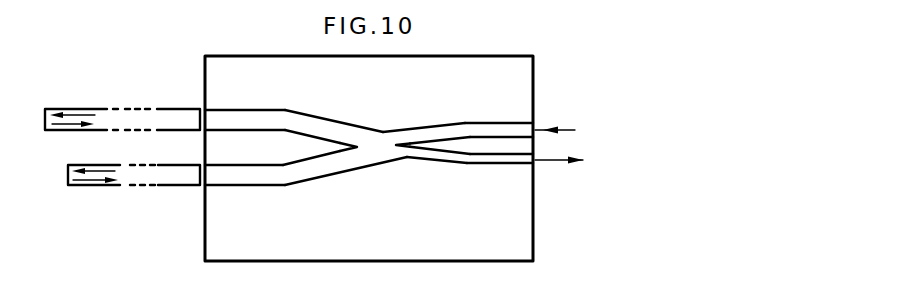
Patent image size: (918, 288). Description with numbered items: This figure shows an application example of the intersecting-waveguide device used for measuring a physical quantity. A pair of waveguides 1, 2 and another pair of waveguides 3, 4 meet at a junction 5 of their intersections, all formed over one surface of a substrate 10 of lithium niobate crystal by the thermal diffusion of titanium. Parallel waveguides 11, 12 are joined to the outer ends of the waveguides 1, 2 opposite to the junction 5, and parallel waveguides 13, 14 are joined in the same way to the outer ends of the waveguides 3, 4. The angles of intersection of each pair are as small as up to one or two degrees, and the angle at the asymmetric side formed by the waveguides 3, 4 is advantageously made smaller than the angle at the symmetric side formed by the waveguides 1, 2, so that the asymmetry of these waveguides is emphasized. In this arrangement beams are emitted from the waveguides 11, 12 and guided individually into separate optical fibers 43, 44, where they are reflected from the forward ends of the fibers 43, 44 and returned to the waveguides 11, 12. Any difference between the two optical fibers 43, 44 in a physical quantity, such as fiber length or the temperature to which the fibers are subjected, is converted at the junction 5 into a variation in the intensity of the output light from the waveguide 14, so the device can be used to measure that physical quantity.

The substrate 10 is at (533, 67).
The parallel waveguide 11 is at (247, 115).
The parallel waveguide 12 is at (243, 182).
The waveguide 1 is at (331, 127).
The waveguide 2 is at (335, 168).
The junction 5 is at (380, 150).
The waveguide 3 is at (445, 131).
The waveguide 4 is at (450, 163).
The parallel waveguide 13 is at (501, 113).
The parallel waveguide 14 is at (502, 167).
The optical fiber 43 is at (170, 108).
The optical fiber 44 is at (165, 186).